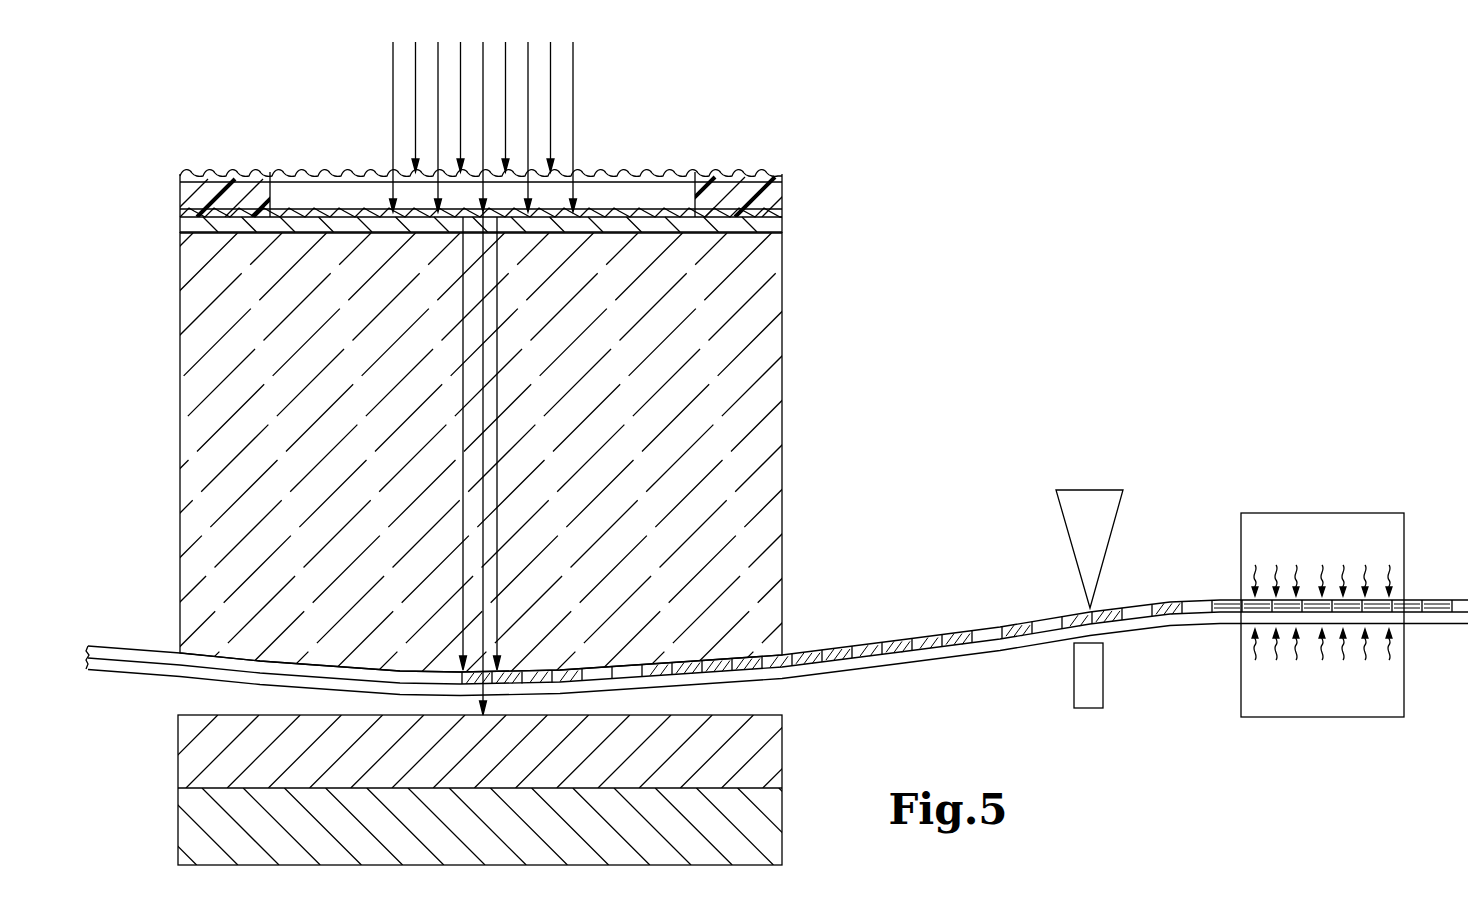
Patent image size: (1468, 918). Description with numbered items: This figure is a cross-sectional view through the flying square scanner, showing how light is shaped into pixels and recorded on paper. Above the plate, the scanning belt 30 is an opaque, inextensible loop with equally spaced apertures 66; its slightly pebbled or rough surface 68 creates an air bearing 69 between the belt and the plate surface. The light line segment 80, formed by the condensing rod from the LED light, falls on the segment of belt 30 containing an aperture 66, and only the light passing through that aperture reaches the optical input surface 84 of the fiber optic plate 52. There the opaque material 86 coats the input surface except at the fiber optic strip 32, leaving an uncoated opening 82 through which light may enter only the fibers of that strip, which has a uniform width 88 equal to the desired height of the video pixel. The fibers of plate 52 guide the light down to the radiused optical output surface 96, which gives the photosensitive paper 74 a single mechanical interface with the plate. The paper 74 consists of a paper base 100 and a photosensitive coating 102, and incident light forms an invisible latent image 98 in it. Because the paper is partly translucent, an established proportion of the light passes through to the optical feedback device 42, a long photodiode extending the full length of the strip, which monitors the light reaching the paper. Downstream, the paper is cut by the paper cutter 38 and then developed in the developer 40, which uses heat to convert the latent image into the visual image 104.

The scanning belt 30 is at (243, 180).
The fiber optic strip 32 is at (498, 355).
The paper cutter 38 is at (1081, 482).
The developer 40 is at (1333, 512).
The optical feedback device 42 is at (784, 784).
The fiber optic plate 52 is at (783, 342).
The apertures 66 is at (302, 192).
The pebbled or rough surface 68 is at (784, 216).
The air bearing 69 is at (180, 213).
The photosensitive paper 74 is at (838, 640).
The light line segment 80 is at (396, 66).
The aperture 82 is at (498, 222).
The optical input surface 84 is at (784, 234).
The opaque material 86 is at (378, 229).
The width 88 is at (463, 498).
The optical output surface 96 is at (500, 670).
The invisible latent image 98 is at (472, 702).
The paper base 100 is at (150, 651).
The photosensitive coating 102 is at (150, 679).
The visual image 104 is at (1454, 600).